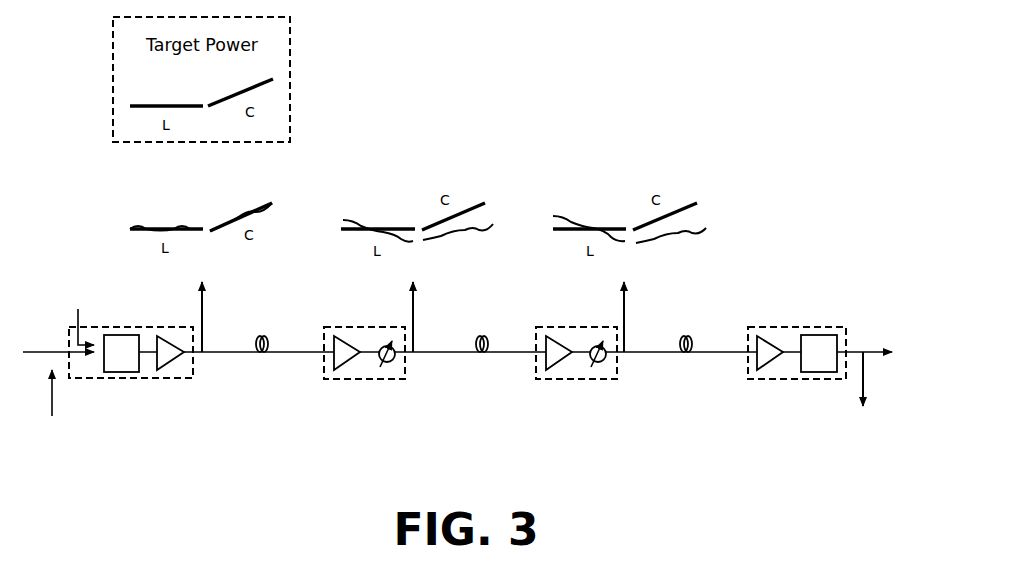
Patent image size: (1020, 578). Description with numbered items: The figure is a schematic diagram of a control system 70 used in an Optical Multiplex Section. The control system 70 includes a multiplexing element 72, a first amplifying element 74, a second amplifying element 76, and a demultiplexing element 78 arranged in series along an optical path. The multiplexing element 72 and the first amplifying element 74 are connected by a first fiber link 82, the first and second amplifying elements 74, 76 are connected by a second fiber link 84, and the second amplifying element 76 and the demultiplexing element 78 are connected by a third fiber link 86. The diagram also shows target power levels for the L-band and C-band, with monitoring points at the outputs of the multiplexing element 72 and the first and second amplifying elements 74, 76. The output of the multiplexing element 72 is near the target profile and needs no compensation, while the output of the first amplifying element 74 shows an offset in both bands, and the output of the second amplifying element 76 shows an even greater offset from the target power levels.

The control system 70 is at (775, 130).
The multiplexing element 72 is at (145, 379).
The first amplifying element 74 is at (365, 379).
The second amplifying element 76 is at (577, 379).
The demultiplexing element 78 is at (790, 379).
The first fiber link 82 is at (247, 355).
The second fiber link 84 is at (468, 355).
The third fiber link 86 is at (672, 355).